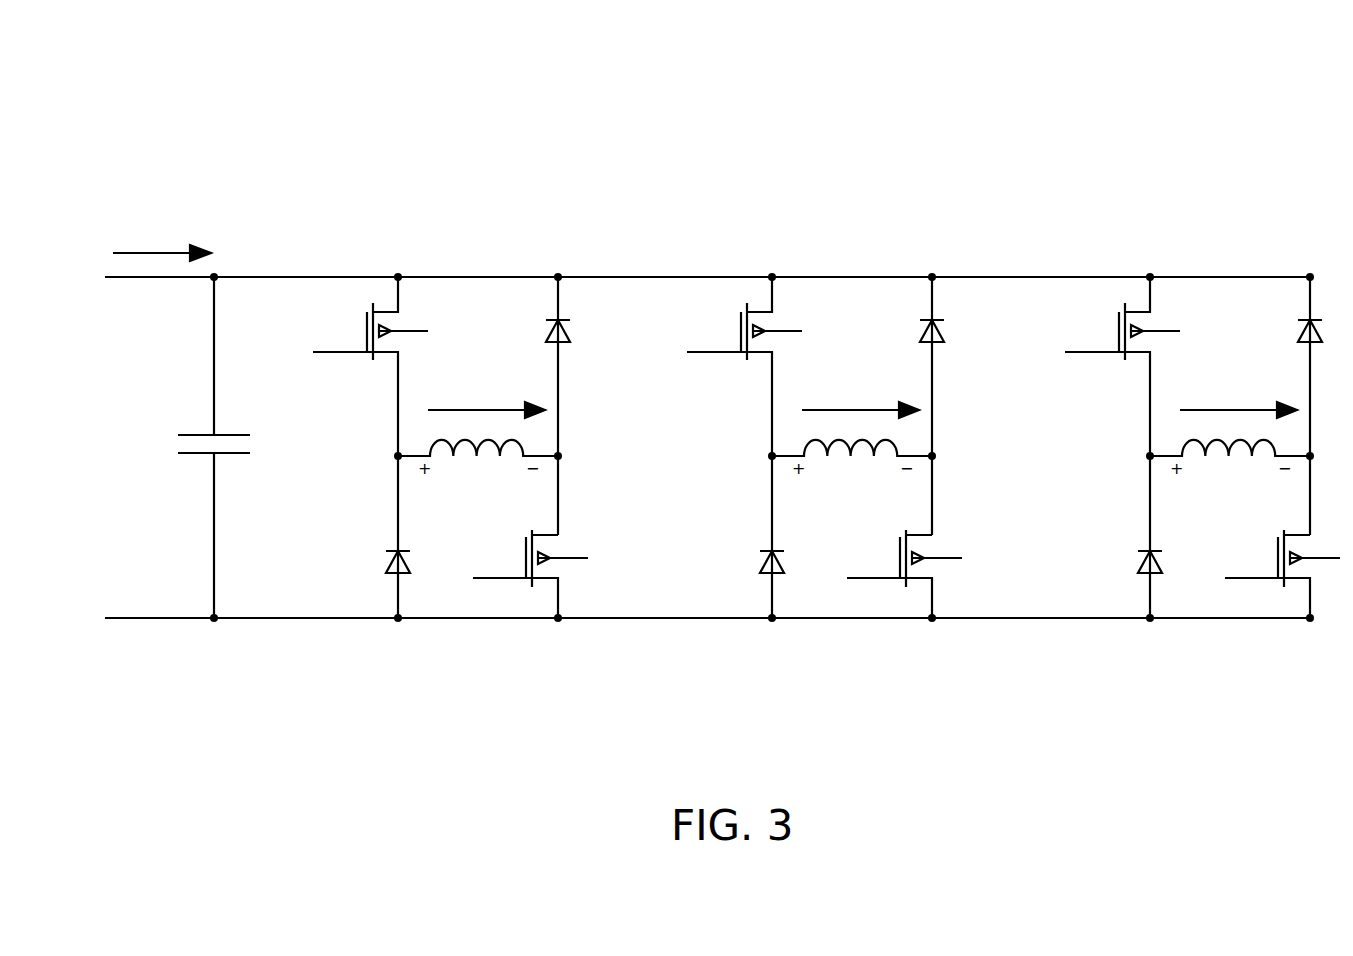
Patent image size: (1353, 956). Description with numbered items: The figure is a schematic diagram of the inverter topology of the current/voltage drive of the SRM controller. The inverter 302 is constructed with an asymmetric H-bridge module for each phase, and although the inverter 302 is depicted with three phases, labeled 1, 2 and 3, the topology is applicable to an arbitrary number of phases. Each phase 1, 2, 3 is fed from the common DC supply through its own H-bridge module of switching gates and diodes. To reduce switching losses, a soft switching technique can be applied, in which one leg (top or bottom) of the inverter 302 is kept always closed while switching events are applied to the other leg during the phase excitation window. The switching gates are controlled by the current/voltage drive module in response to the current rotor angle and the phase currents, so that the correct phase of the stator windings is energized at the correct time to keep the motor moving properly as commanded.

The inverter 302 is at (1061, 93).
The phase 1 inductor 1 is at (450, 447).
The phase 2 inductor 2 is at (824, 447).
The phase 3 inductor 3 is at (1202, 447).